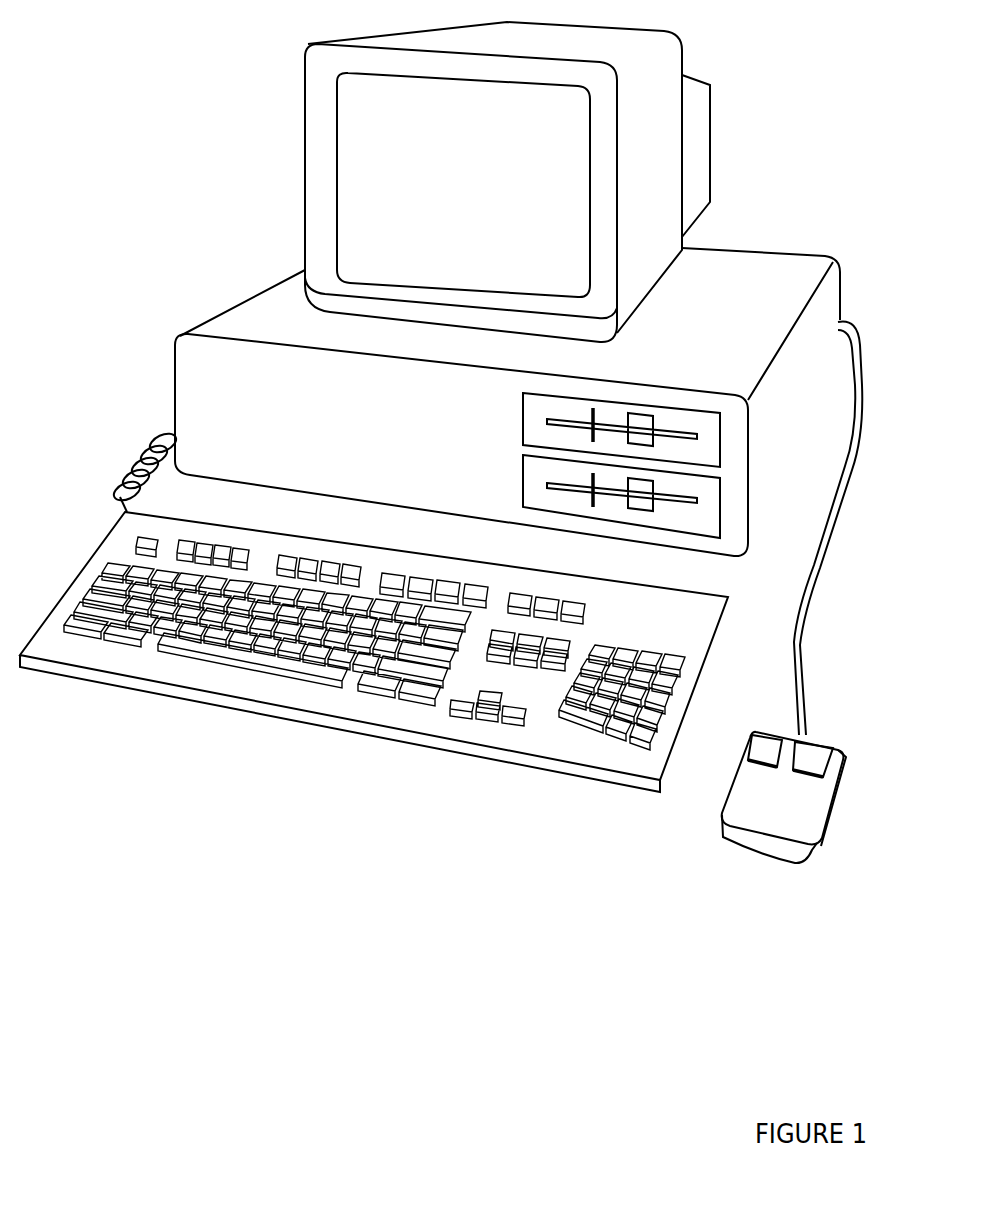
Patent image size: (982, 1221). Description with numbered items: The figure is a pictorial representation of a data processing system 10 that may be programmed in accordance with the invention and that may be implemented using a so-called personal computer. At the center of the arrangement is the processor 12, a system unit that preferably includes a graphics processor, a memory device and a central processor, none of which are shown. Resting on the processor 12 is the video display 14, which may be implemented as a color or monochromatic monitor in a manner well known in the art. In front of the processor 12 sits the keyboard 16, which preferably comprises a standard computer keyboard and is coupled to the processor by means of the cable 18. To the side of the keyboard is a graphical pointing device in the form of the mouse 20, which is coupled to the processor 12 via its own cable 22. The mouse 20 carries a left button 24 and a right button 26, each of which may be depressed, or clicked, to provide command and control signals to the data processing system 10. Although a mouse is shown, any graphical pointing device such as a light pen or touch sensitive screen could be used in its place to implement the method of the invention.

The data processing system 10 is at (215, 168).
The processor 12 is at (760, 527).
The video display 14 is at (705, 123).
The keyboard 16 is at (193, 673).
The cable 18 is at (131, 448).
The mouse 20 is at (765, 820).
The cable 22 is at (802, 670).
The left button 24 is at (763, 742).
The right button 26 is at (817, 753).